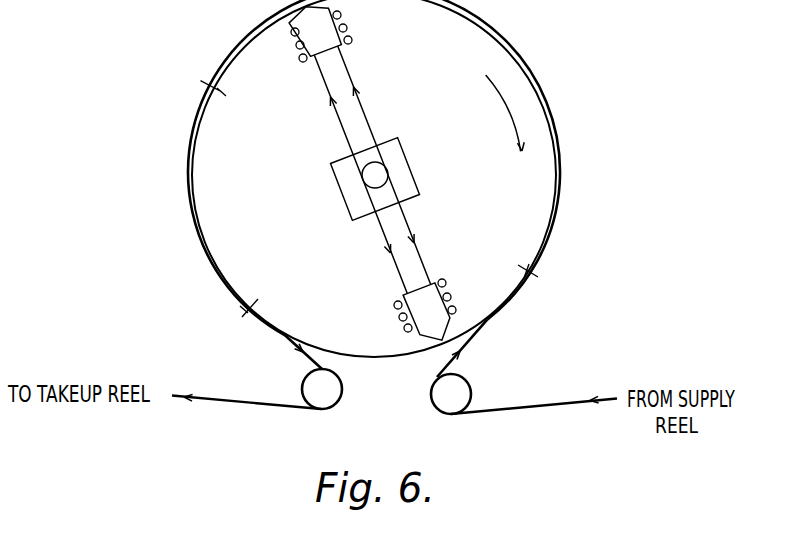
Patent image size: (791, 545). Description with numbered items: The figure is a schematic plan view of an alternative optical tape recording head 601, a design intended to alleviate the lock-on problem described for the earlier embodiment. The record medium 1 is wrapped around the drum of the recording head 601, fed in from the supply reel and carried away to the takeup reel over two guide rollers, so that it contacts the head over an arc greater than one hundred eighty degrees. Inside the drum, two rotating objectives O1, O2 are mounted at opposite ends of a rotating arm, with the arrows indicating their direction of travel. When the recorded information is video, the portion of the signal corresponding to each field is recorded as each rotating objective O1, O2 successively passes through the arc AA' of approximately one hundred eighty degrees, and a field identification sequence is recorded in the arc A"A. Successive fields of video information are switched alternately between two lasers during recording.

The optical tape recording head 601 is at (399, 178).
The record medium 1 is at (529, 404).
The rotating objective O1 is at (436, 308).
The rotating objective O2 is at (335, 34).